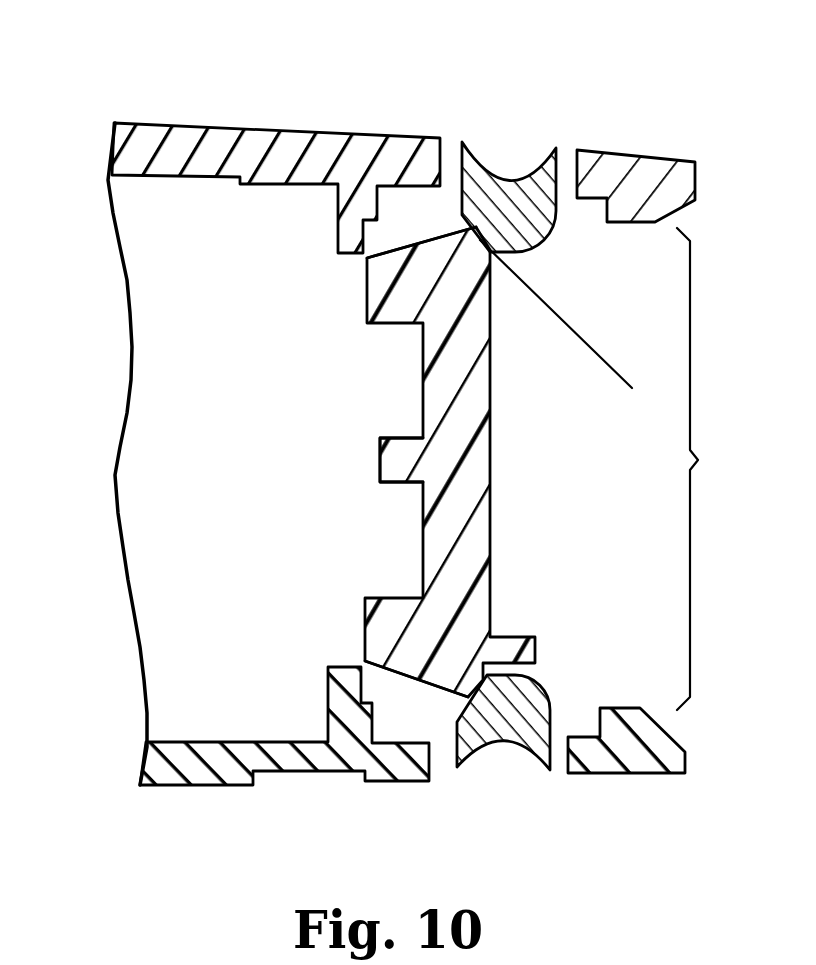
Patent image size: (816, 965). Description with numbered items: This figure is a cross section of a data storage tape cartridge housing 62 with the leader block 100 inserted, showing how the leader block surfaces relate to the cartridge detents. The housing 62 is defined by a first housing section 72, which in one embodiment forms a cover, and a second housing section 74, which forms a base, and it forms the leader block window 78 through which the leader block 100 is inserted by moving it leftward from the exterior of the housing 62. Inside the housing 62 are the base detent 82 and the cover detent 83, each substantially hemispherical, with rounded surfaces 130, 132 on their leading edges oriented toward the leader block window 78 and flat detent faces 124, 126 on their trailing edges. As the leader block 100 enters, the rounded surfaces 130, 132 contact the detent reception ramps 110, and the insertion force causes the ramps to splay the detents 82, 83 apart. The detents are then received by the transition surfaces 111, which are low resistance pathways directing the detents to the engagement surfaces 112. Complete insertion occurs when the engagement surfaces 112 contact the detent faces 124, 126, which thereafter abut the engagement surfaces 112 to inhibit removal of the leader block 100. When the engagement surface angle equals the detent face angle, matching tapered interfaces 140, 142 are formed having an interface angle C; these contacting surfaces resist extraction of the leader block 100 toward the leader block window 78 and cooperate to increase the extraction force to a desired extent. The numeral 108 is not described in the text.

The housing 62 is at (112, 155).
The first housing section 72 is at (147, 123).
The second housing section 74 is at (190, 787).
The leader block window 78 is at (655, 461).
The base detent 82 is at (518, 705).
The cover detent 83 is at (508, 185).
The leader block 100 is at (357, 455).
The sealing blade 108 is at (505, 500).
The detent reception ramps 110 is at (462, 228).
The transition surfaces 111 is at (478, 212).
The engagement surfaces 112 is at (512, 249).
The detent face 124 is at (468, 236).
The detent face 126 is at (480, 700).
The rounded surface 130 is at (553, 226).
The rounded surface 132 is at (545, 695).
The matching tapered interface 140 is at (461, 217).
The matching tapered interface 142 is at (448, 707).
The interface angle C is at (604, 377).